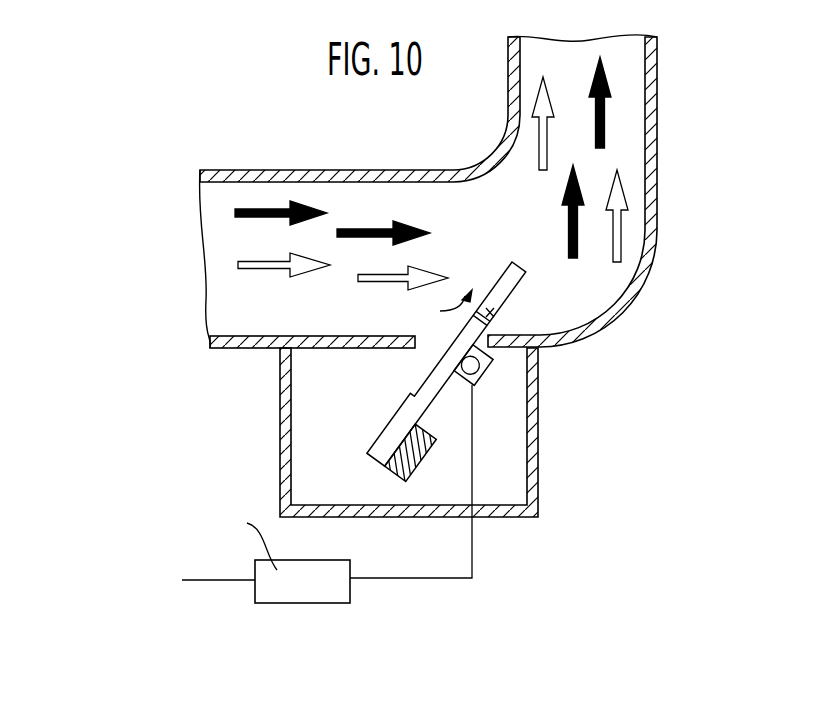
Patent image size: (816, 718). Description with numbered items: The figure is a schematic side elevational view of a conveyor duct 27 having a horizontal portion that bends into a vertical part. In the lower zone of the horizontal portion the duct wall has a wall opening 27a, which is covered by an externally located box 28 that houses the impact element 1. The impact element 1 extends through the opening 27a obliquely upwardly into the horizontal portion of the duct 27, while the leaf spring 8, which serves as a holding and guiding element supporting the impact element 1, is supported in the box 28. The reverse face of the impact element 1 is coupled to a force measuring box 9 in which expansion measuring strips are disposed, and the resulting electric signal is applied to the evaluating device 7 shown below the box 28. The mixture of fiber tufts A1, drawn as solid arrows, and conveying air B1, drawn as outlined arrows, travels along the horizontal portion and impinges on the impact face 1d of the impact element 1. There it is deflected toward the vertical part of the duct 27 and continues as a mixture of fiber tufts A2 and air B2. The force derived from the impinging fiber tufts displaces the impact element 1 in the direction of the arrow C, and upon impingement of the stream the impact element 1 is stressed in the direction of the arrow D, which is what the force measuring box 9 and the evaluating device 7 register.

The conveyor duct 27 is at (660, 222).
The wall opening 27a is at (428, 348).
The box 28 is at (280, 430).
The impact element 1 is at (520, 278).
The impact face 1d is at (500, 278).
The force measuring box 9 is at (477, 380).
The leaf spring 8 is at (407, 413).
The evaluating device 7 is at (347, 572).
The incident fiber tuft stream A1 is at (263, 205).
The deflected fiber tuft stream A2 is at (603, 127).
The incident air stream B1 is at (272, 268).
The deflected air stream B2 is at (538, 149).
The arrow indicating displacement direction C is at (496, 312).
The arrow indicating stress direction D is at (449, 307).